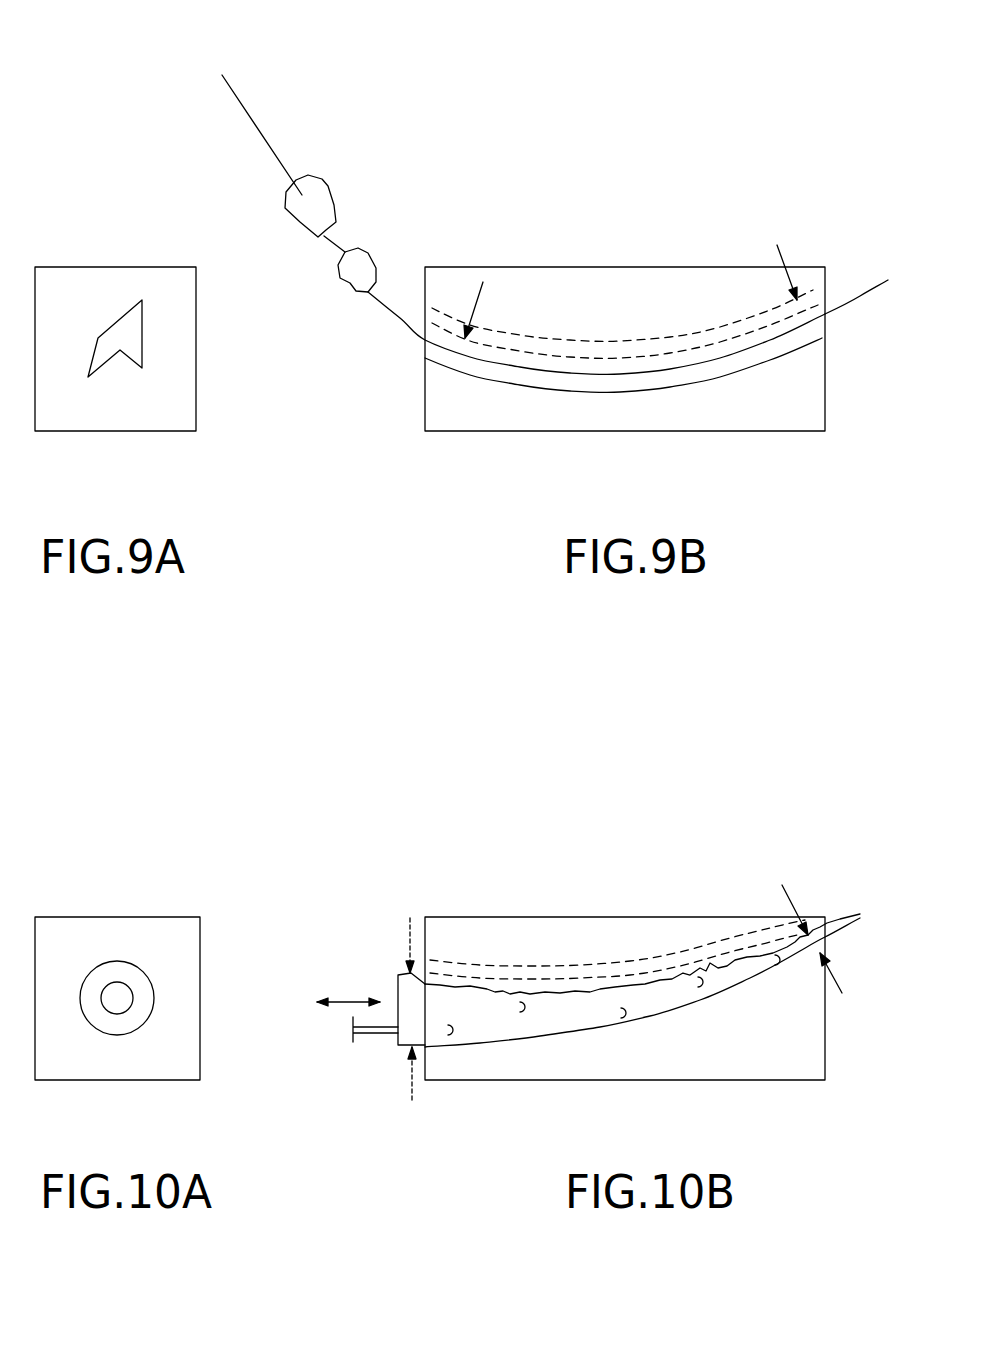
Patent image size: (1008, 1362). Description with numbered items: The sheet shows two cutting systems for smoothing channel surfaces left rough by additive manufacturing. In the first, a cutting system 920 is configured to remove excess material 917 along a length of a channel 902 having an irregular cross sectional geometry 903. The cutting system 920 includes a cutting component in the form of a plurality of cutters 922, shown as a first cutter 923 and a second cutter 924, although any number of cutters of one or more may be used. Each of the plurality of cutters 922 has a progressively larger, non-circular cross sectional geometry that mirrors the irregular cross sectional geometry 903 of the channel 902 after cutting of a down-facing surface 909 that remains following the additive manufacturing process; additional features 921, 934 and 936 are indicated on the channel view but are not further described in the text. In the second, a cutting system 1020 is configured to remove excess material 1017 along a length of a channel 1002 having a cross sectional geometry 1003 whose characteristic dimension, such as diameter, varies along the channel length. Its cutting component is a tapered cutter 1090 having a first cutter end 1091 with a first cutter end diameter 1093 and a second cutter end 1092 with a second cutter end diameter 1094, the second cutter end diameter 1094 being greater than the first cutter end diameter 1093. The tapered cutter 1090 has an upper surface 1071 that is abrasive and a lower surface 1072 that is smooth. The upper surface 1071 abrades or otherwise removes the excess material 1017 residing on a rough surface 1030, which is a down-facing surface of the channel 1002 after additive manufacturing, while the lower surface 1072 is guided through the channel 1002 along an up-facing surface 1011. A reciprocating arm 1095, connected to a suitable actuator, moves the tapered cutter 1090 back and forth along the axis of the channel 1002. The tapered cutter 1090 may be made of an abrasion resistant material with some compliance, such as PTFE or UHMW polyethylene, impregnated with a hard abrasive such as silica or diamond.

In FIG. 9A, the irregular cross sectional geometry 903 is at (162, 353).
In FIG. 9A, the down-facing surface 909 is at (120, 313).
In FIG. 9B, the down-facing surface 909 is at (537, 353).
In FIG. 9B, the cutting system 920 is at (277, 97).
In FIG. 9B, the second cutter 924 is at (293, 192).
In FIG. 9B, the plurality of cutters 922 is at (275, 217).
In FIG. 9B, the first cutter 923 is at (350, 277).
In FIG. 9B, the channel 902 is at (730, 315).
In FIG. 9B, the surface 921 is at (867, 298).
In FIG. 9B, the substrate 934 is at (455, 373).
In FIG. 9B, the excess material 917 is at (622, 347).
In FIG. 9B, the edge 936 is at (813, 345).
In FIG. 10A, the cross sectional geometry 1003 is at (173, 970).
In FIG. 10B, the cutting system 1020 is at (458, 868).
In FIG. 10B, the second cutter end diameter 1094 is at (407, 945).
In FIG. 10B, the second cutter end 1092 is at (405, 1030).
In FIG. 10B, the reciprocating arm 1095 is at (365, 1035).
In FIG. 10B, the upper surface 1071 is at (490, 990).
In FIG. 10B, the rough surface 1030 is at (570, 987).
In FIG. 10B, the excess material 1017 is at (613, 970).
In FIG. 10B, the channel 1002 is at (710, 943).
In FIG. 10B, the first cutter end diameter 1093 is at (800, 930).
In FIG. 10B, the first cutter end 1091 is at (800, 947).
In FIG. 10B, the up-facing surface 1011 is at (647, 1020).
In FIG. 10B, the tapered cutter 1090 is at (505, 1030).
In FIG. 10B, the lower surface 1072 is at (580, 1033).